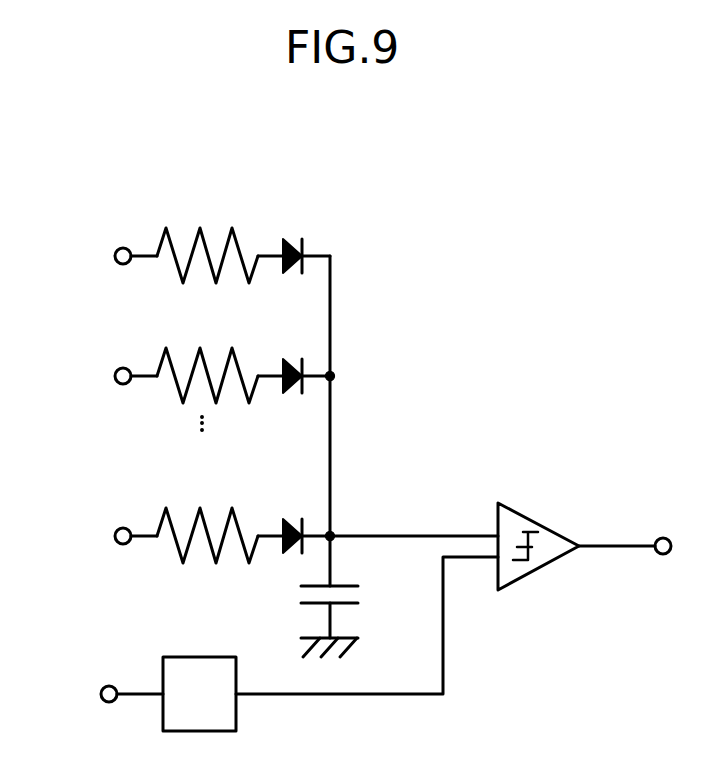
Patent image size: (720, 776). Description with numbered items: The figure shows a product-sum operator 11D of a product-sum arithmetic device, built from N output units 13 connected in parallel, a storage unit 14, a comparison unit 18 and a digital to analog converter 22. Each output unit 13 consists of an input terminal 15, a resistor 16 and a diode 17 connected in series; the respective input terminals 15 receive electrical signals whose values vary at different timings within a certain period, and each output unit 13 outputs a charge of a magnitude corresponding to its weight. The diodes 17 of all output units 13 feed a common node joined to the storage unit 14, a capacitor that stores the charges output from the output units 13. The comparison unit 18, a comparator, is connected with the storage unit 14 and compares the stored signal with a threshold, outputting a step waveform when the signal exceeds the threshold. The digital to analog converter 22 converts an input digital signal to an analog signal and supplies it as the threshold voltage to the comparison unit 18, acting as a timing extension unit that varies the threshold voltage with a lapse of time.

The product-sum operator 11D is at (390, 152).
The output unit 13 is at (86, 256).
The storage unit 14 is at (356, 618).
The input terminal 15 is at (122, 246).
The resistor 16 is at (200, 226).
The diode 17 is at (292, 238).
The comparison unit 18 is at (558, 590).
The digital to analog converter 22 is at (200, 657).